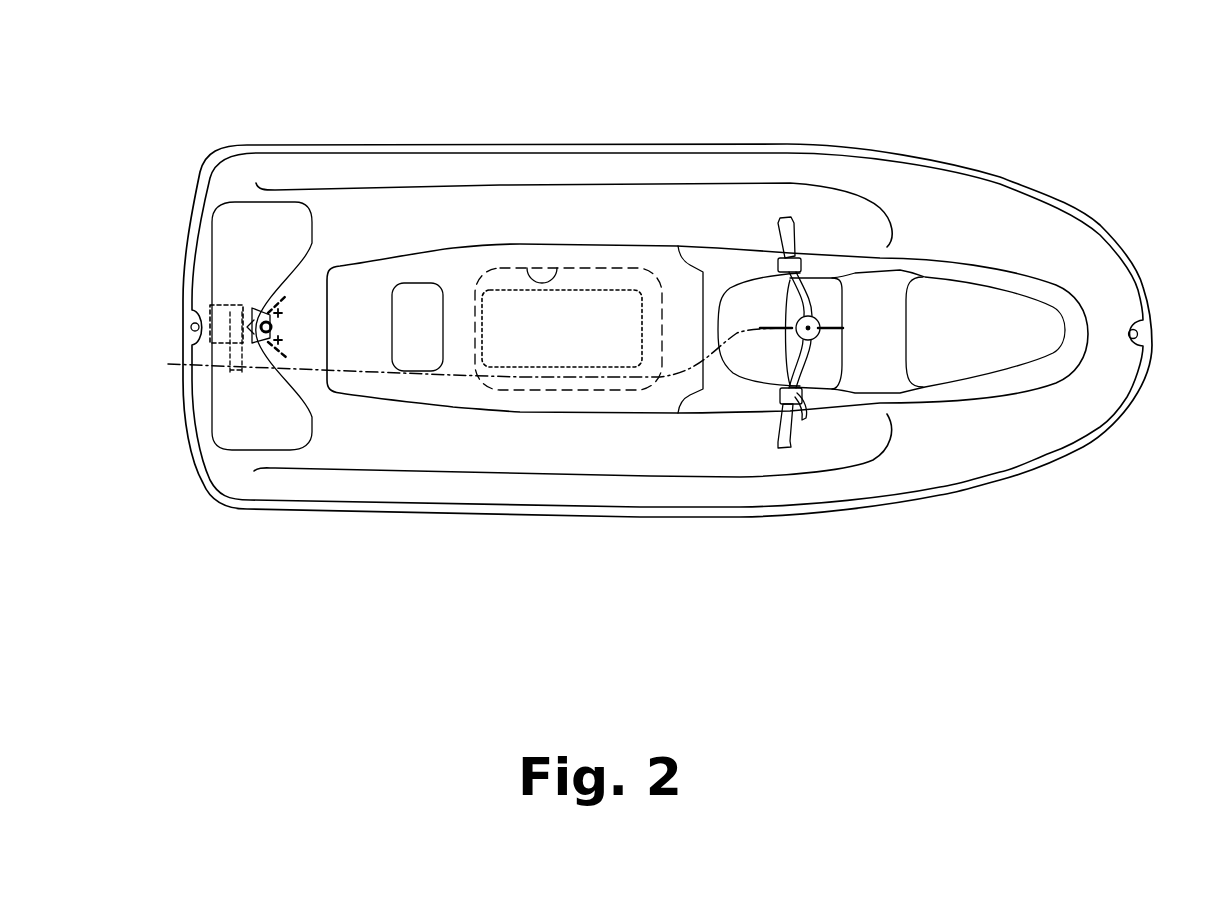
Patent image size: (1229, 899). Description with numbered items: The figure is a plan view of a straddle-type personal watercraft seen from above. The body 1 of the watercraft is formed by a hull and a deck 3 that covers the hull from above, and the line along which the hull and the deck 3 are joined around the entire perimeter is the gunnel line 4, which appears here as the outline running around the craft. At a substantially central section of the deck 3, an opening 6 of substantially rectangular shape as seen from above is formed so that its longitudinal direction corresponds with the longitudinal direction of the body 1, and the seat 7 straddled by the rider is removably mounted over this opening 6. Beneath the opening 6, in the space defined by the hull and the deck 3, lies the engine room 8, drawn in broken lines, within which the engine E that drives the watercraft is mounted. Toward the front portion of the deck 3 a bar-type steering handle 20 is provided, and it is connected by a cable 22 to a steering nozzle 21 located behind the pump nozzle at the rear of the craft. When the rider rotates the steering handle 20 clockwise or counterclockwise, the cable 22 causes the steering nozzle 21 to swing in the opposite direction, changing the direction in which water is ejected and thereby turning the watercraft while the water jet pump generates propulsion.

The body 1 is at (1079, 249).
The deck 3 is at (950, 218).
The gunnel line 4 is at (1135, 398).
The opening 6 is at (557, 265).
The seat 7 is at (357, 342).
The engine room 8 is at (605, 282).
The steering handle 20 is at (795, 226).
The steering nozzle 21 is at (232, 345).
The cable 22 is at (457, 377).
The engine E is at (572, 333).